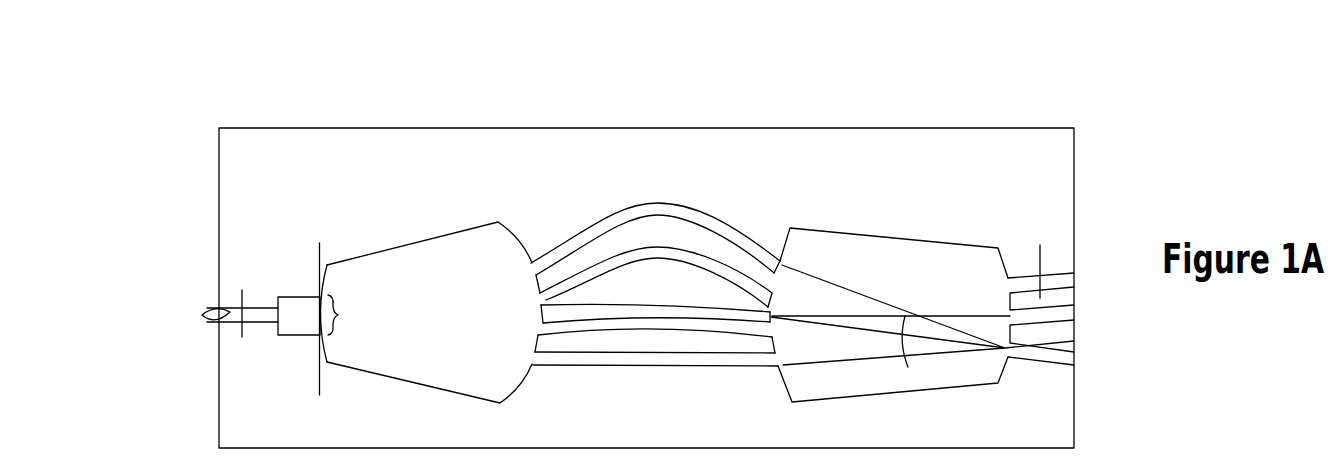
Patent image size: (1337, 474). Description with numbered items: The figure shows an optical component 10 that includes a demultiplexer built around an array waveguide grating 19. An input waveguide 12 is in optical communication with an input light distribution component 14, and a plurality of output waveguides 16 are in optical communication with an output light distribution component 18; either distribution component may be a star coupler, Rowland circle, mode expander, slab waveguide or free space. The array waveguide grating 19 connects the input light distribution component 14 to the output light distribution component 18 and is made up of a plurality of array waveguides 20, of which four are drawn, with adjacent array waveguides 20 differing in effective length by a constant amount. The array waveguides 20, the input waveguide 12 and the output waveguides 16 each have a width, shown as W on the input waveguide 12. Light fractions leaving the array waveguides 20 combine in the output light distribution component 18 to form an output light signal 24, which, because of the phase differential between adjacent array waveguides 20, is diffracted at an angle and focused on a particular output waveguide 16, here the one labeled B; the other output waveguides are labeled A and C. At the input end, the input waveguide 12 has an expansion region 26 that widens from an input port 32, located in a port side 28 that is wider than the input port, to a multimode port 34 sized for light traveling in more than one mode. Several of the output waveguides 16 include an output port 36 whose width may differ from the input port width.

The optical component 10 is at (501, 116).
The input waveguide 12 is at (228, 305).
The input light distribution component 14 is at (425, 240).
The output waveguides 16 is at (1032, 360).
The output light distribution component 18 is at (962, 388).
The array waveguide grating 19 is at (655, 276).
The array waveguides 20 is at (588, 221).
The output light signal 24 is at (885, 302).
The expansion region 26 is at (300, 256).
The port side 28 is at (277, 299).
The input port 32 is at (277, 314).
The multimode port 34 is at (345, 315).
The output port 36 is at (1010, 288).
The width W is at (201, 315).
The plane A is at (237, 329).
The output waveguide B is at (317, 382).
The plane C is at (1043, 265).